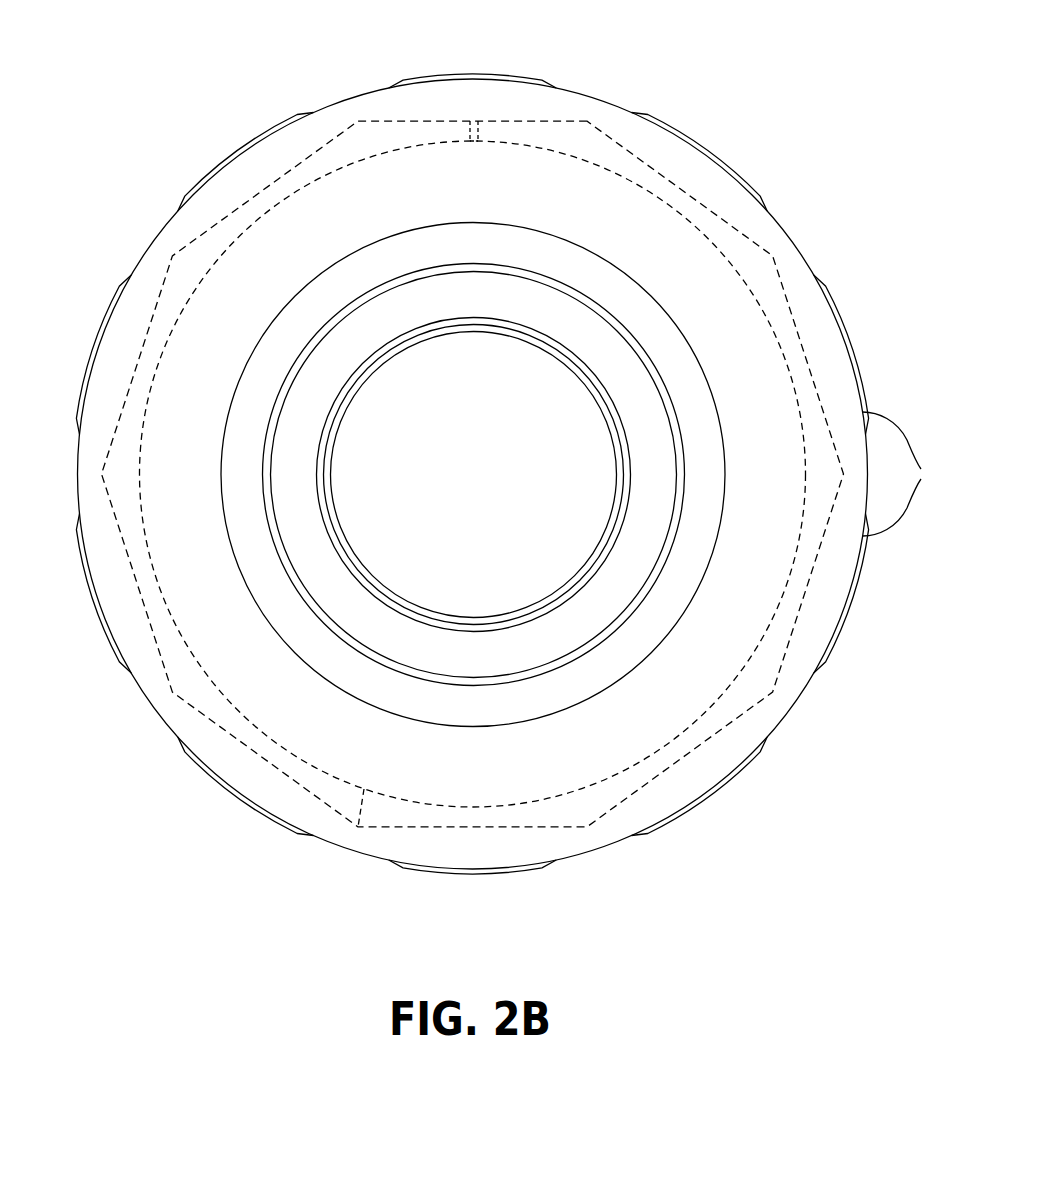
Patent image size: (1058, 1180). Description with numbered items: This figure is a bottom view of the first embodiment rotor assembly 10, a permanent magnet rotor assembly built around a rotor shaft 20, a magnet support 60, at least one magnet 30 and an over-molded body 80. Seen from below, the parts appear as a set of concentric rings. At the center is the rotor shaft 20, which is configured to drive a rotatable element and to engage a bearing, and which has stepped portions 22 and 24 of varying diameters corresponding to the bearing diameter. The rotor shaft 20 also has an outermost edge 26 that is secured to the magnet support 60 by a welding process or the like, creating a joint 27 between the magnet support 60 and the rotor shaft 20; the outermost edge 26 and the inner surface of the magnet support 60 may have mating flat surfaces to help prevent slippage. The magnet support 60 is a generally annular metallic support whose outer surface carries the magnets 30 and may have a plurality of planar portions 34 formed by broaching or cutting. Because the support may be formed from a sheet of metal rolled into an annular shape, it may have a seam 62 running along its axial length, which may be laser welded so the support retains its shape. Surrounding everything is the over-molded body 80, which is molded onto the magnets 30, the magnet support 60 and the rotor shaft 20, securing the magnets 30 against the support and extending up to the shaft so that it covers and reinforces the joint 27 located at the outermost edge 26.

The rotor assembly 10 is at (107, 110).
The rotor shaft 20 is at (278, 718).
The stepped portion 22 is at (362, 520).
The stepped portion 24 is at (348, 607).
The outermost edge 26 is at (330, 857).
The joint 27 is at (352, 835).
The magnet 30 is at (919, 474).
The planar portion 34 is at (800, 330).
The magnet support 60 is at (684, 194).
The seam 62 is at (475, 138).
The over-molded body 80 is at (168, 252).